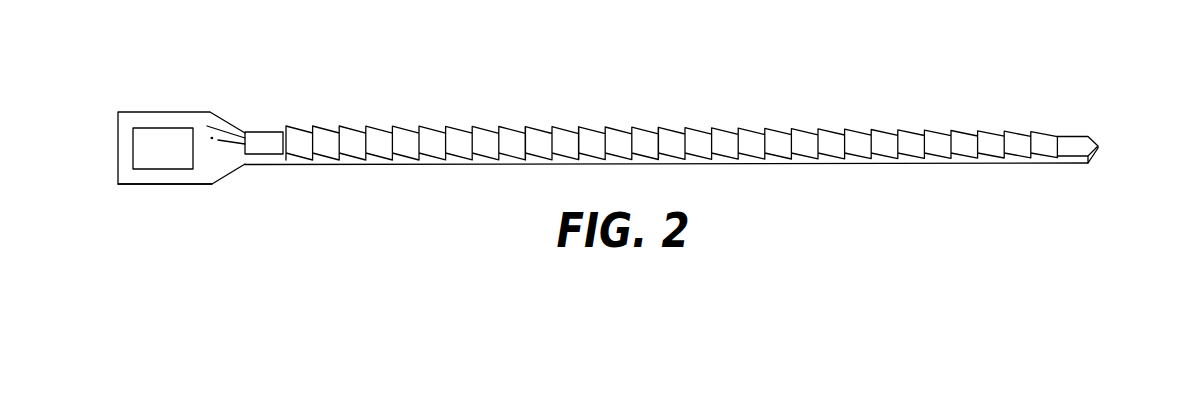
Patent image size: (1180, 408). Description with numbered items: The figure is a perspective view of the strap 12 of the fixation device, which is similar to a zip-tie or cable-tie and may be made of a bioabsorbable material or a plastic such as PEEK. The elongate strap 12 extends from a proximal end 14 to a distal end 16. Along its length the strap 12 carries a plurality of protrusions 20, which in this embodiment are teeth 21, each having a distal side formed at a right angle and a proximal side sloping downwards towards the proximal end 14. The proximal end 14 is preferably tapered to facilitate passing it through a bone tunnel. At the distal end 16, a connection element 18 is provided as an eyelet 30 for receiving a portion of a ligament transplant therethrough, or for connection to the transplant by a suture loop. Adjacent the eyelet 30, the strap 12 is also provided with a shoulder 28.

The strap 12 is at (457, 166).
The proximal end 14 is at (1108, 142).
The distal end 16 is at (112, 147).
The connection element 18 is at (164, 187).
The protrusions 20 is at (802, 117).
The teeth 21 is at (661, 127).
The shoulder 28 is at (228, 120).
The eyelet 30 is at (167, 147).